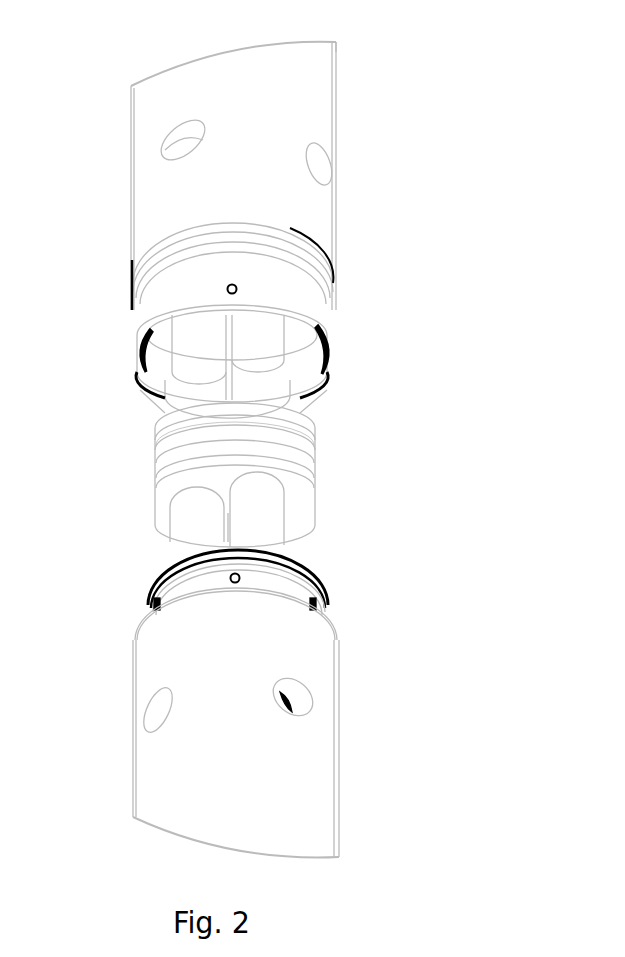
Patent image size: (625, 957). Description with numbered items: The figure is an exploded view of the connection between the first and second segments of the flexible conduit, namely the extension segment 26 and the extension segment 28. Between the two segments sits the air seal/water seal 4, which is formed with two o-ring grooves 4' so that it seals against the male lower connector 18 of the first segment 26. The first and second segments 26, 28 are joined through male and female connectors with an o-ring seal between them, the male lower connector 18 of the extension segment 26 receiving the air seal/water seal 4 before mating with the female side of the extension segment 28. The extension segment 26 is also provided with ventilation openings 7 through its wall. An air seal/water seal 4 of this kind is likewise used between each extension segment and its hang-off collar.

The extension segment 28 is at (322, 214).
The air seal/water seal 4 is at (299, 426).
The o-ring grooves 4' is at (169, 448).
The male lower connector 18 is at (293, 592).
The ventilation openings 7 is at (300, 698).
The extension segment 26 is at (326, 723).